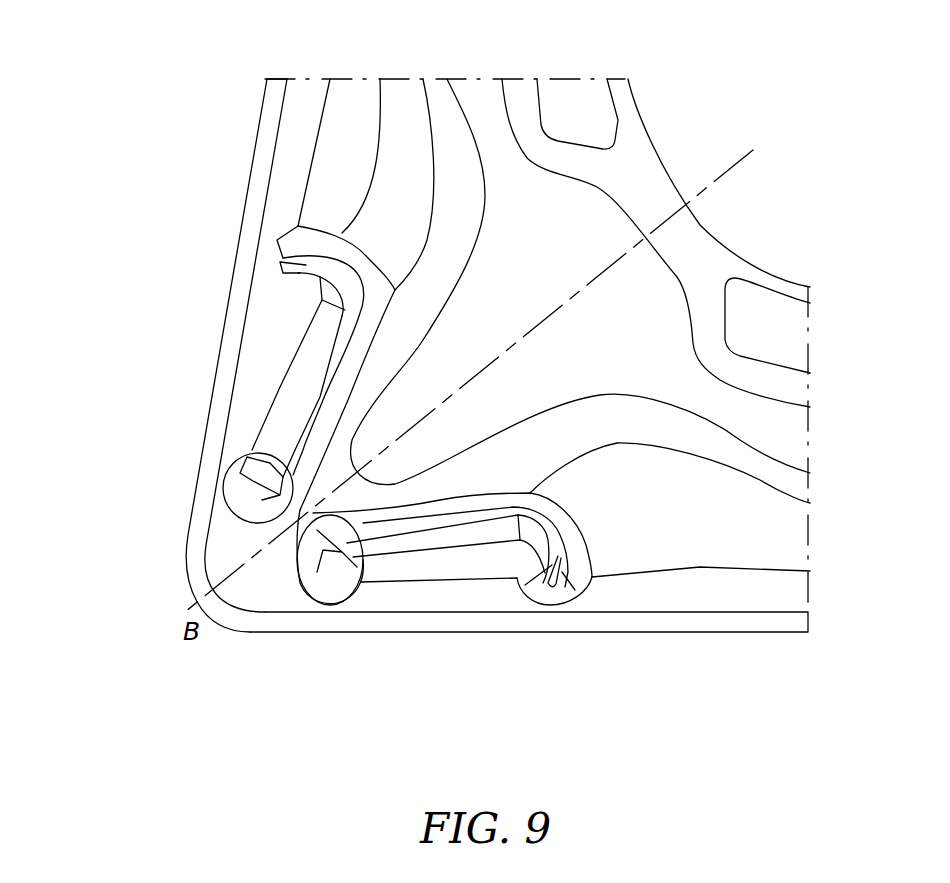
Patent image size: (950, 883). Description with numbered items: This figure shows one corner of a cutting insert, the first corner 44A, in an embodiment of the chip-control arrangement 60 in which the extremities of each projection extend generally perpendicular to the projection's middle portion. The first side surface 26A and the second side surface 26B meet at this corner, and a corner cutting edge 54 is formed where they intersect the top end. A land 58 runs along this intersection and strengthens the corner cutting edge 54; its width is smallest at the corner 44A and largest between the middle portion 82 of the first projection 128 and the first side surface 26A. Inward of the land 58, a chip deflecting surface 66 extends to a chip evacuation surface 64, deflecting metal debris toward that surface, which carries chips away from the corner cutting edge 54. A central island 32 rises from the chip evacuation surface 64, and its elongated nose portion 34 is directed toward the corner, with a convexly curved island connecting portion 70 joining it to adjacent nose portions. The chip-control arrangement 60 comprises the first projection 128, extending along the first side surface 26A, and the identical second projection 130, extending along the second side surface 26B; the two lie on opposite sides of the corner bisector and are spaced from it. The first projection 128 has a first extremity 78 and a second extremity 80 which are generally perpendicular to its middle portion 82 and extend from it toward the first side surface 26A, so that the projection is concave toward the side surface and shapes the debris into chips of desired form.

The first side surface 26A is at (705, 633).
The second side surface 26B is at (264, 100).
The central island 32 is at (653, 300).
The elongated nose portion 34 is at (460, 357).
The first corner 44A is at (248, 652).
The corner cutting edge 54 is at (385, 652).
The land 58 is at (213, 427).
The chip-control arrangement 60 is at (152, 548).
The chip evacuation surface 64 is at (760, 530).
The chip deflecting surface 66 is at (293, 187).
The island connecting portion 70 is at (662, 422).
The first extremity 78 is at (280, 264).
The second extremity 80 is at (243, 494).
The middle portion 82 is at (320, 395).
The first projection 128 is at (568, 598).
The second projection 130 is at (380, 79).